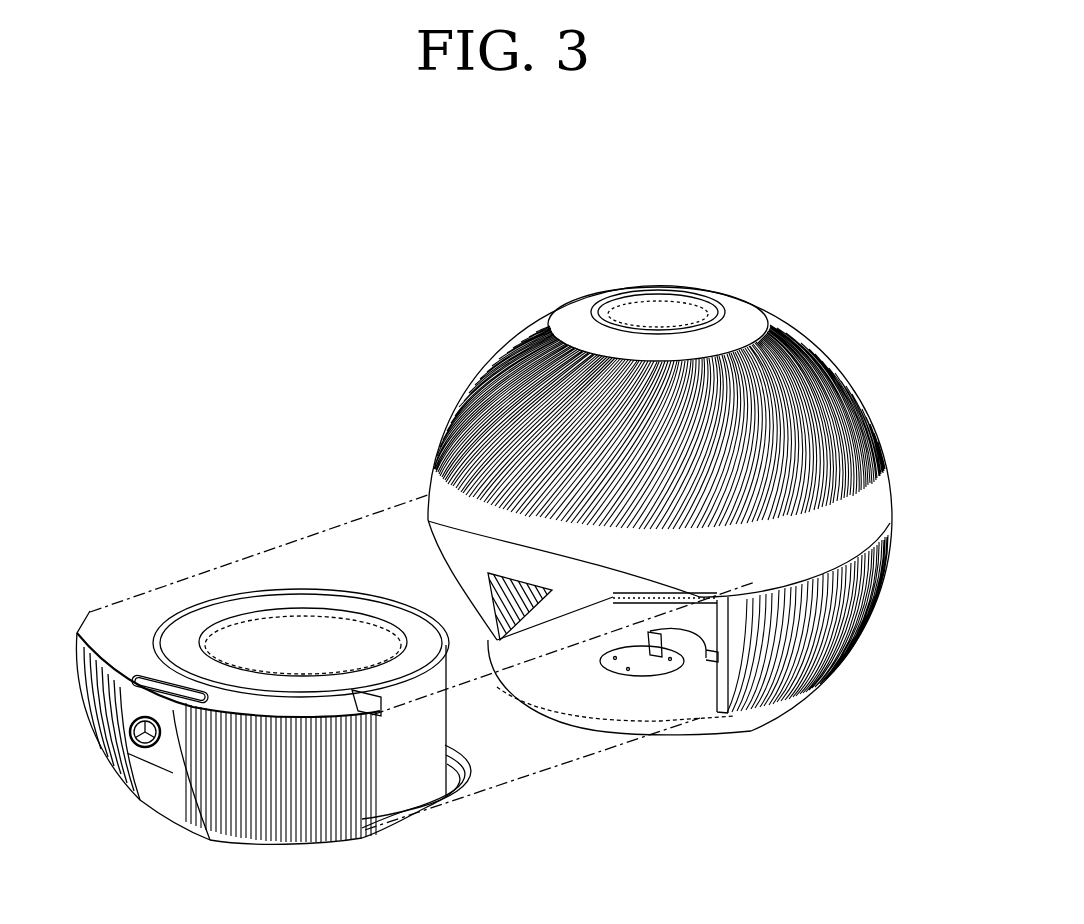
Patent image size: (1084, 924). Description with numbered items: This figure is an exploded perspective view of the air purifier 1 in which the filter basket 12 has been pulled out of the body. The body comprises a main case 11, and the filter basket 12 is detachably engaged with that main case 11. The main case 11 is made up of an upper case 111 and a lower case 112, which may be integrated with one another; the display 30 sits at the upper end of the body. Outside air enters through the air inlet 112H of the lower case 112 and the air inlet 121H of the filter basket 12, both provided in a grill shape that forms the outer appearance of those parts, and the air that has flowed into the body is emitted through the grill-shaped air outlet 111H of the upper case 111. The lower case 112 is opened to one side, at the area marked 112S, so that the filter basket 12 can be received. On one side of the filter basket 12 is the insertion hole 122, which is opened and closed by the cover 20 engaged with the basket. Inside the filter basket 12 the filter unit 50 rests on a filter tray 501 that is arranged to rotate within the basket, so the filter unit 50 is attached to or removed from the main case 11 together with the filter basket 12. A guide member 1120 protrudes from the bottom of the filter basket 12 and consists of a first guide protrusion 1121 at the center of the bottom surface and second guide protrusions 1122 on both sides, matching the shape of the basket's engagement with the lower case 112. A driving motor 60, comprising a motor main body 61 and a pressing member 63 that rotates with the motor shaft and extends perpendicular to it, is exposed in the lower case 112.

The air purifier 1 is at (466, 190).
The main case 11 is at (923, 420).
The upper case 111 is at (888, 492).
The air outlet 111H is at (825, 380).
The lower case 112 is at (882, 577).
The air inlet 112H is at (853, 638).
The cut section surface 112S is at (574, 642).
The guide member 1120 is at (360, 447).
The first guide protrusion 1121 is at (703, 625).
The second guide protrusion 1122 is at (563, 607).
The filter basket 12 is at (66, 636).
The air inlet 121H is at (283, 818).
The insertion hole 122 is at (150, 753).
The cover 20 is at (173, 822).
The display 30 is at (657, 298).
The filter unit 50 is at (556, 759).
The filter tray 501 is at (455, 772).
The driving motor 60 is at (693, 717).
The motor main body 61 is at (663, 660).
The pressing member 63 is at (687, 670).